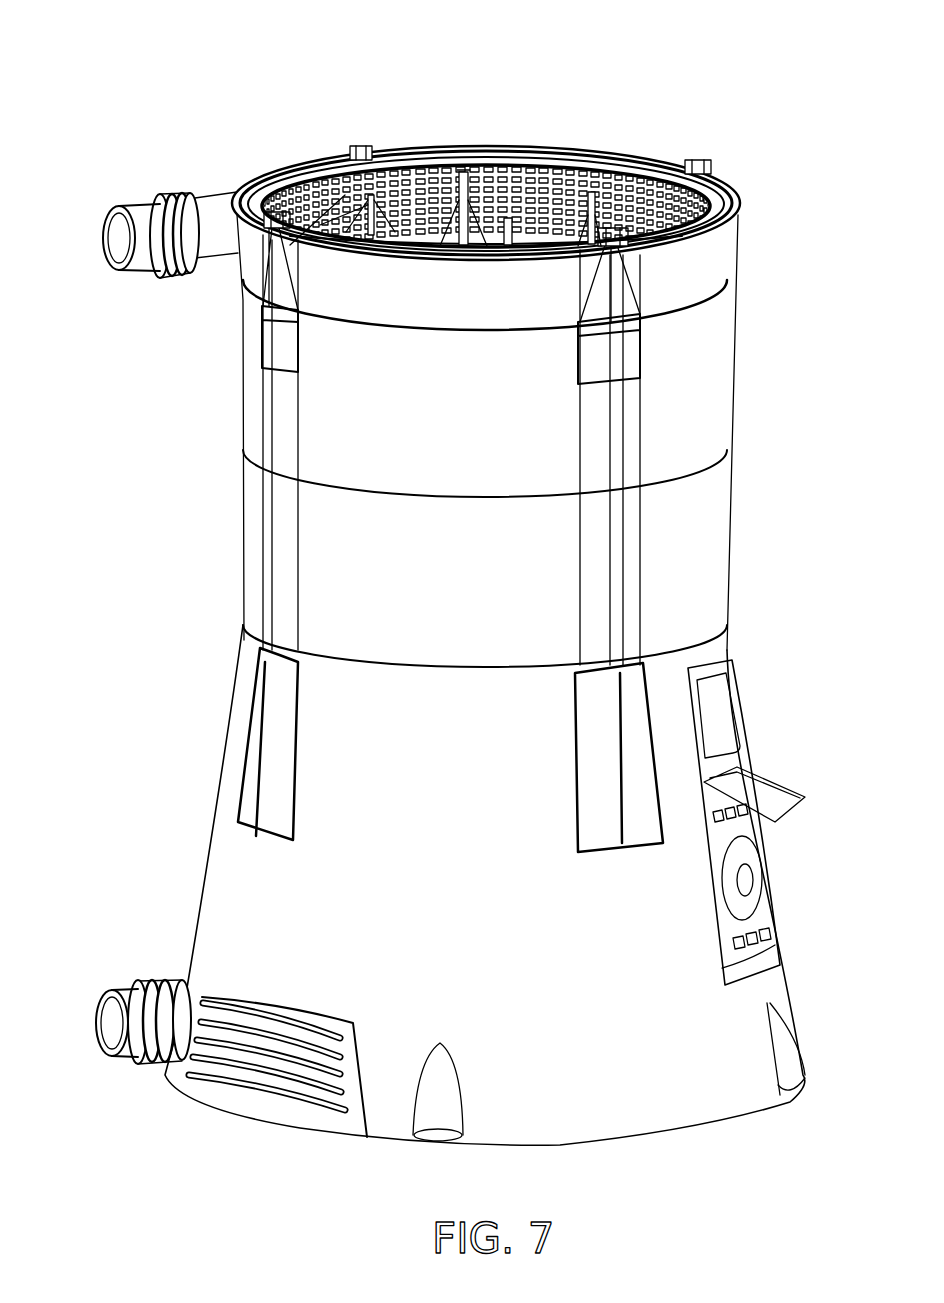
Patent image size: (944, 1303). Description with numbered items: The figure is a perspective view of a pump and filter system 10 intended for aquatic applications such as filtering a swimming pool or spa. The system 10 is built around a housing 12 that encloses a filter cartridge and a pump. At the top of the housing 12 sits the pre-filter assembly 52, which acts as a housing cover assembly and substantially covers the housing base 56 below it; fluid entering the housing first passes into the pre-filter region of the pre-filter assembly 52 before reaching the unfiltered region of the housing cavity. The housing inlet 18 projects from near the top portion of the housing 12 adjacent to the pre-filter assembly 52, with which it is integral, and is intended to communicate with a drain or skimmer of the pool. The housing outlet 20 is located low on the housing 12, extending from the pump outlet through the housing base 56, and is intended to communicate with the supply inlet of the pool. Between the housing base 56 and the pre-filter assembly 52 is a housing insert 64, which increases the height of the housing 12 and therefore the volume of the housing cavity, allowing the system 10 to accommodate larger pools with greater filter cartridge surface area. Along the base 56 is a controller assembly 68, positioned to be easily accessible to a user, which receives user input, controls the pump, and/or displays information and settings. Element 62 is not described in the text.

The pump and filter system 10 is at (115, 46).
The housing 12 is at (735, 435).
The housing inlet 18 is at (140, 198).
The housing outlet 20 is at (130, 985).
The pre-filter assembly 52 is at (733, 251).
The housing base 56 is at (765, 985).
The filter basket 62 is at (572, 176).
The housing insert 64 is at (718, 518).
The controller assembly 68 is at (766, 862).